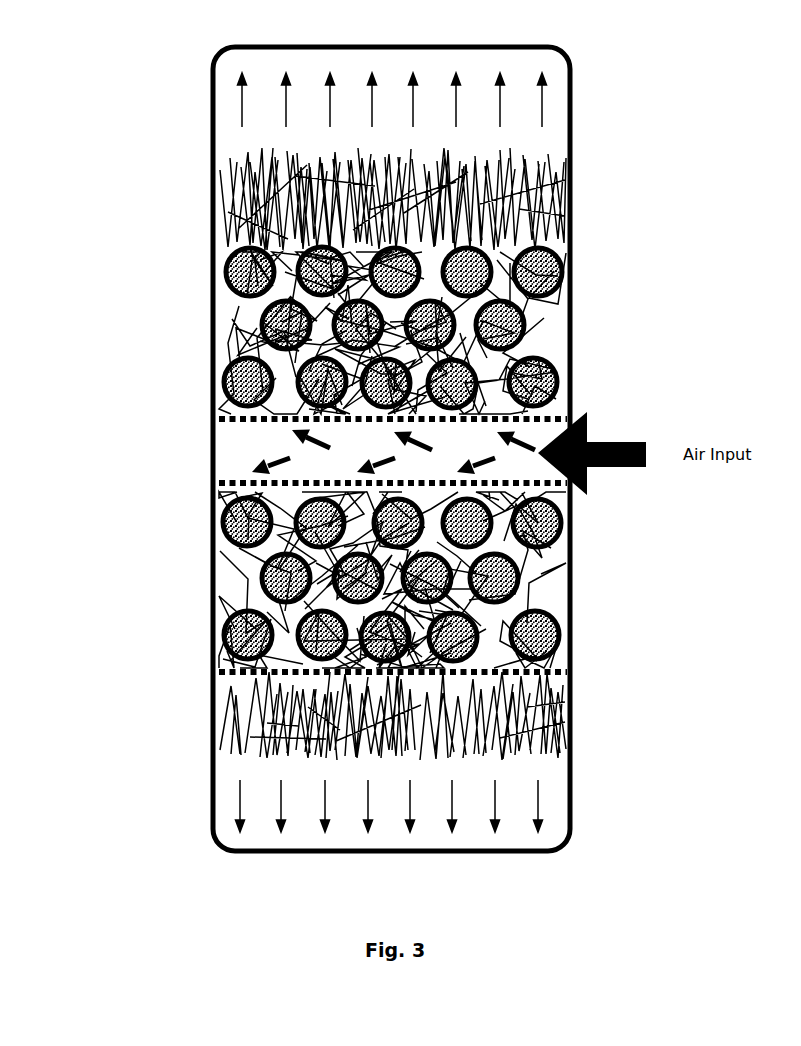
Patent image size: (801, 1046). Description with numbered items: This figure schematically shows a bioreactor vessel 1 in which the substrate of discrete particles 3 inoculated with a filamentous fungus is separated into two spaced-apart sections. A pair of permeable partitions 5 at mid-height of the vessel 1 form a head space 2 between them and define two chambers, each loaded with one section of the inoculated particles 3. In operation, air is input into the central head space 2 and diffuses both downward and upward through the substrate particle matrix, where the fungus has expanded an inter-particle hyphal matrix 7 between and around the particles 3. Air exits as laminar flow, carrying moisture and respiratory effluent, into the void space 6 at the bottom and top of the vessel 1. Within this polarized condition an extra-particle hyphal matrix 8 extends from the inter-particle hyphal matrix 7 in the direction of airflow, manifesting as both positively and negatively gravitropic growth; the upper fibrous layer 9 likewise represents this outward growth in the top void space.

The vessel 1 is at (211, 138).
The head space 2 is at (270, 448).
The substrate particles 3 is at (238, 375).
The permeable partitions 5 is at (515, 481).
The void space 6 is at (430, 108).
The inter-particle hyphal matrix 7 is at (540, 320).
The extra-particle hyphal matrix 8 is at (478, 712).
The upper fibrous layer 9 is at (325, 198).